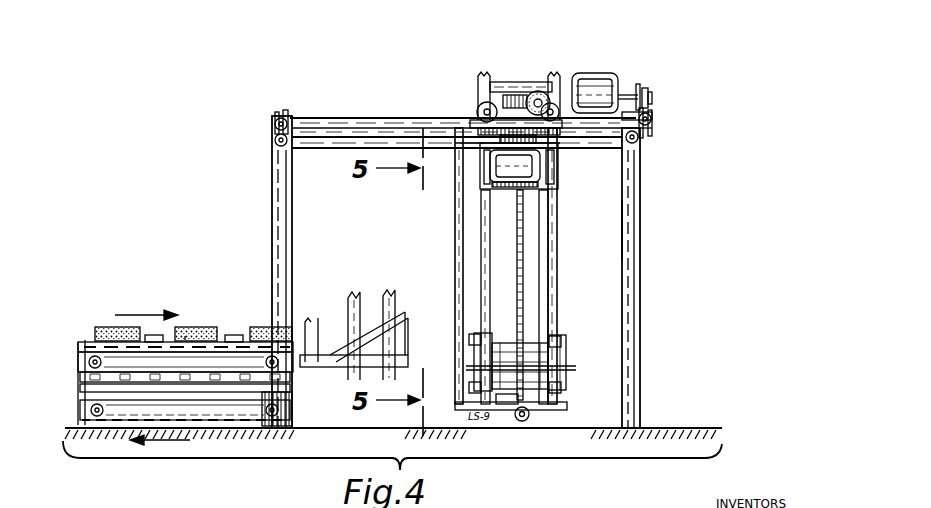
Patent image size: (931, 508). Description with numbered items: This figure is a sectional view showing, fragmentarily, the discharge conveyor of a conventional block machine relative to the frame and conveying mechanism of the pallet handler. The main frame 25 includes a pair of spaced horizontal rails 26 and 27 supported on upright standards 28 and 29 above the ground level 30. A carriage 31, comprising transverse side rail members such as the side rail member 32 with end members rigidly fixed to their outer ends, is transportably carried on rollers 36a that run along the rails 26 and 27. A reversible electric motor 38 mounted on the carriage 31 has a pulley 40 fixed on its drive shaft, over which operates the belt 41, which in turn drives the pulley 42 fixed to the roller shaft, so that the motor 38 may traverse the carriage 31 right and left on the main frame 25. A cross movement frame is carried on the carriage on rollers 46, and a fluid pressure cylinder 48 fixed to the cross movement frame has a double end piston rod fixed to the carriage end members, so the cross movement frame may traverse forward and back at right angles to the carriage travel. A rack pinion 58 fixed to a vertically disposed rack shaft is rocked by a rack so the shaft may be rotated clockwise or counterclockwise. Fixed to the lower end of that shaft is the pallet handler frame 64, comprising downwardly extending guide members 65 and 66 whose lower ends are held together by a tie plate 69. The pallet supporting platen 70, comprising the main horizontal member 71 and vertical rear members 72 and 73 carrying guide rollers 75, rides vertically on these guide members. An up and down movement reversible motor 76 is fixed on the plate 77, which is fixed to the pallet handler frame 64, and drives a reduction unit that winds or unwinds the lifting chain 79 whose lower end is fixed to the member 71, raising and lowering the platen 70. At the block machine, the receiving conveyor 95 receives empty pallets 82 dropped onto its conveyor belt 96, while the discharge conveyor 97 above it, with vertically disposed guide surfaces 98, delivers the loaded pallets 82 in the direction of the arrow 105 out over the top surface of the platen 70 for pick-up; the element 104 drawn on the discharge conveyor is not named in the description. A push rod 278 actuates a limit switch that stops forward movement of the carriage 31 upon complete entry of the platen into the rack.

The main frame 25 is at (642, 243).
The horizontal rail 26 is at (274, 146).
The horizontal rail 27 is at (638, 142).
The upright standard 28 is at (280, 220).
The upright standard 29 is at (630, 297).
The ground level 30 is at (660, 422).
The carriage 31 is at (386, 112).
The transverse side rail member 32 is at (338, 116).
The rollers 36a is at (280, 112).
The reversible electric motor 38 is at (596, 84).
The pulley 40 is at (648, 102).
The belt 41 is at (640, 92).
The pulley 42 is at (650, 130).
The rollers 46 is at (476, 106).
The fluid pressure cylinder 48 is at (540, 102).
The rack pinion 58 is at (512, 98).
The pallet handler frame 64 is at (558, 244).
The guide member 65 is at (462, 272).
The guide member 66 is at (560, 284).
The tie plate 69 is at (544, 412).
The pallet supporting platen 70 is at (184, 338).
The main horizontal member 71 is at (524, 338).
The vertical rear member 72 is at (474, 354).
The vertical rear member 73 is at (562, 354).
The guide rollers 75 is at (474, 334).
The up and down movement reversible motor 76 is at (530, 178).
The plate 77 is at (512, 202).
The lifting chain 79 is at (520, 270).
The pallets 82 is at (108, 334).
The receiving conveyor 95 is at (130, 428).
The conveyor belt 96 is at (206, 418).
The discharge conveyor 97 is at (244, 388).
The guide surfaces 98 is at (230, 356).
The article 104 is at (200, 328).
The arrow 105 is at (124, 314).
The push rod 278 is at (512, 410).